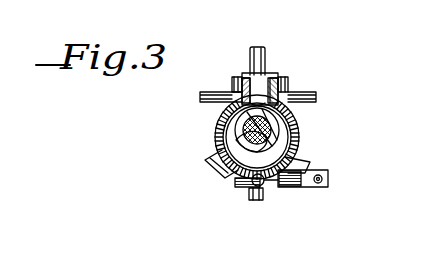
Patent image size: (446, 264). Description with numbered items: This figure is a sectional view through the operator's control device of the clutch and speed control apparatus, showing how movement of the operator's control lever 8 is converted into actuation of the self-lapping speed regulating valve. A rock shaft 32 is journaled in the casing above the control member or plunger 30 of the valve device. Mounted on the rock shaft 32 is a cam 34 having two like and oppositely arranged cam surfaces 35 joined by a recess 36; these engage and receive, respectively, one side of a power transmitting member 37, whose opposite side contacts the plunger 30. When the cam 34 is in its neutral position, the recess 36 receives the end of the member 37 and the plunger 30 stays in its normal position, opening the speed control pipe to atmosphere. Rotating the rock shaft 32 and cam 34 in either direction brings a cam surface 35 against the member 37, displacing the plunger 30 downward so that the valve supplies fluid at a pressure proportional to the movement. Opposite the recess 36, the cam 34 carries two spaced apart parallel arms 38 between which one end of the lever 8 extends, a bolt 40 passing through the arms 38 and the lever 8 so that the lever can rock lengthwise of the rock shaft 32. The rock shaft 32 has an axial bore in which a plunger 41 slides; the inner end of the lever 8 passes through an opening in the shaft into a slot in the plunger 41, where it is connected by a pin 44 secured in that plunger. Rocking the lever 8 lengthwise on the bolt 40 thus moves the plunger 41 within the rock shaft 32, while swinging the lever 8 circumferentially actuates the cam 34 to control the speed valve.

The operator's control lever 8 is at (255, 59).
The control member or plunger 30 is at (247, 192).
The rock shaft 32 is at (290, 113).
The cam 34 is at (215, 152).
The cam surfaces 35 is at (217, 163).
The recess 36 is at (225, 145).
The power transmitting member 37 is at (280, 188).
The arms 38 is at (212, 92).
The bolt 40 is at (233, 84).
The plunger 41 is at (293, 142).
The pin 44 is at (224, 122).